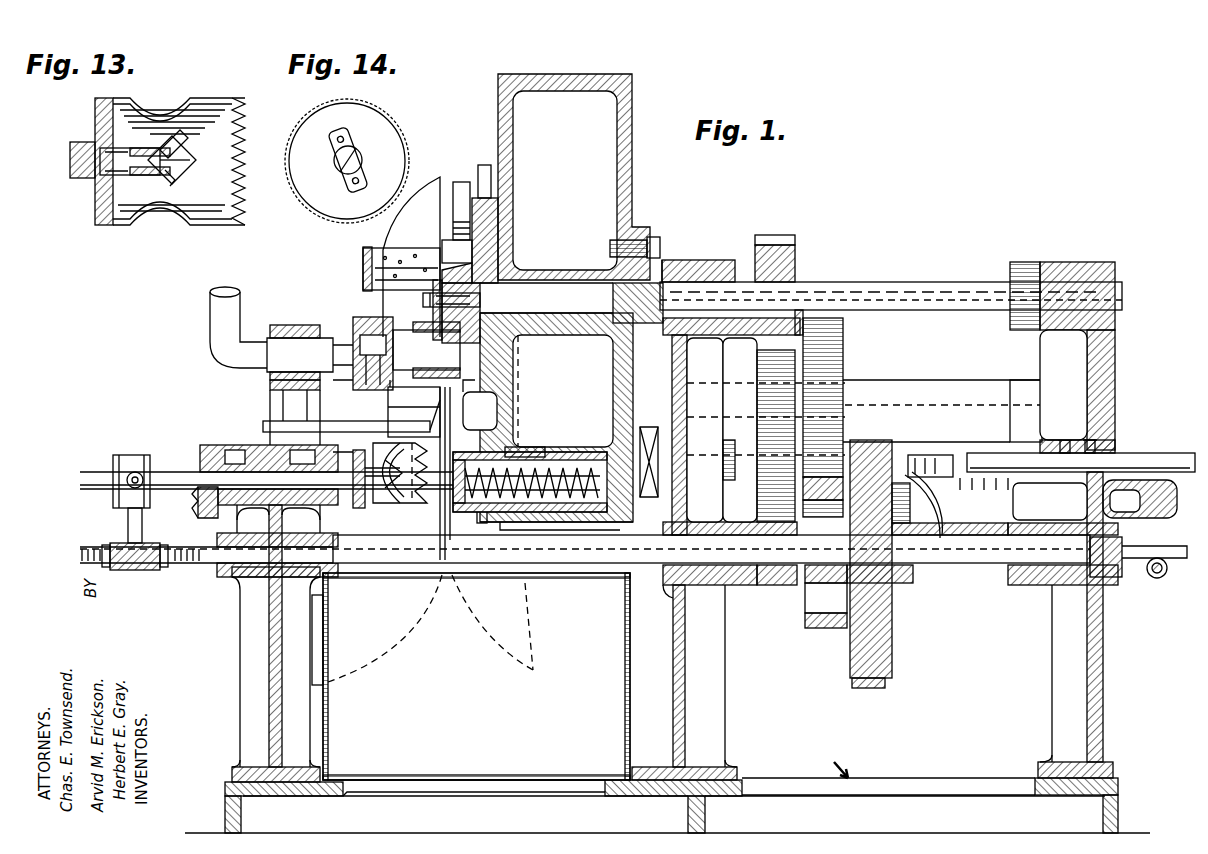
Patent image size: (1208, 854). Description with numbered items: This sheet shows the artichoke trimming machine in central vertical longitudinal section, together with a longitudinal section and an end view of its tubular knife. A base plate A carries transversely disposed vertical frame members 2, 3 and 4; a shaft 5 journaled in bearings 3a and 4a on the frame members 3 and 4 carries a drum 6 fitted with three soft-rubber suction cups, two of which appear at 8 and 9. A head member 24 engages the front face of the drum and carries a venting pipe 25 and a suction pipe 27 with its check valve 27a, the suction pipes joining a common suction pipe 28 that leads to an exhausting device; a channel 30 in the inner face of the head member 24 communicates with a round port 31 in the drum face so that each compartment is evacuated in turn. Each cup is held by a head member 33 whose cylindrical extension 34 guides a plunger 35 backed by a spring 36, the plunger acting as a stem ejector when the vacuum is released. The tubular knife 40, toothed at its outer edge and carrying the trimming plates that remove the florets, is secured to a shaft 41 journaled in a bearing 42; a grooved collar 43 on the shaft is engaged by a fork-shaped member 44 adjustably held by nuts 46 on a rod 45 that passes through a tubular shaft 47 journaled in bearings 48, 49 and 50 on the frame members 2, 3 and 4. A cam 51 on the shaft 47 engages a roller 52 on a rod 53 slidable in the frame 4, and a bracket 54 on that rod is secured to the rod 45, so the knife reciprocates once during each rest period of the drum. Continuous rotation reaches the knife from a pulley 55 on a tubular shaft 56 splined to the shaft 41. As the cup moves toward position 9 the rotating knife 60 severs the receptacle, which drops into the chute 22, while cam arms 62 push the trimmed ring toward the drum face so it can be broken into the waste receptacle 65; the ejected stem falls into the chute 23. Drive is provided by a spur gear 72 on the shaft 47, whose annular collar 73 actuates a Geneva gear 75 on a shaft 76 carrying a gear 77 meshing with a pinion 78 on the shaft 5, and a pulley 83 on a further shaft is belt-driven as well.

In FIG. 1, the vertical frame member 2 is at (246, 690).
In FIG. 1, the vertical frame member 3 is at (714, 667).
In FIG. 1, the bearing 3a is at (695, 262).
In FIG. 1, the vertical frame member 4 is at (1062, 698).
In FIG. 1, the bearing 4a is at (1078, 264).
In FIG. 1, the shaft 5 is at (888, 283).
In FIG. 1, the drum 6 is at (632, 86).
In FIG. 1, the suction cup 8 is at (462, 505).
In FIG. 1, the suction cup 9 is at (458, 182).
In FIG. 1, the chute 22 is at (387, 406).
In FIG. 1, the chute 23 is at (383, 235).
In FIG. 1, the head member 24 is at (500, 249).
In FIG. 1, the venting pipe 25 is at (418, 250).
In FIG. 1, the suction pipe 27 is at (410, 330).
In FIG. 1, the check valve 27a is at (360, 315).
In FIG. 1, the common suction pipe 28 is at (207, 314).
In FIG. 1, the channel 30 is at (470, 396).
In FIG. 1, the round port 31 is at (520, 359).
In FIG. 1, the head member 33 is at (490, 178).
In FIG. 1, the cylindrical extension 34 is at (560, 516).
In FIG. 1, the plunger 35 is at (520, 455).
In FIG. 1, the spring 36 is at (535, 470).
In FIG. 13, the tubular knife 40 is at (195, 222).
In FIG. 14, the tubular knife 40 is at (290, 120).
In FIG. 1, the tubular knife 40 is at (390, 450).
In FIG. 13, the shaft 41 is at (86, 168).
In FIG. 1, the shaft 41 is at (182, 470).
In FIG. 1, the bearing 42 is at (255, 440).
In FIG. 1, the grooved collar 43 is at (138, 455).
In FIG. 1, the fork-shaped member 44 is at (128, 520).
In FIG. 1, the rod 45 is at (203, 548).
In FIG. 1, the nuts 46 is at (163, 572).
In FIG. 1, the tubular shaft 47 is at (243, 582).
In FIG. 1, the bearing 48 is at (268, 585).
In FIG. 1, the bearing 49 is at (668, 600).
In FIG. 1, the bearing 50 is at (1060, 586).
In FIG. 1, the cam 51 is at (912, 583).
In FIG. 1, the roller 52 is at (925, 478).
In FIG. 1, the rod 53 is at (1142, 452).
In FIG. 13, the bracket 54 is at (178, 140).
In FIG. 14, the bracket 54 is at (362, 162).
In FIG. 1, the bracket 54 is at (390, 496).
In FIG. 1, the pulley 55 is at (212, 445).
In FIG. 1, the tubular shaft 56 is at (198, 490).
In FIG. 1, the knife 60 is at (432, 510).
In FIG. 1, the cam arms 62 is at (437, 410).
In FIG. 1, the waste receptacle 65 is at (476, 676).
In FIG. 1, the spur gear 72 is at (863, 690).
In FIG. 1, the annular collar 73 is at (810, 630).
In FIG. 1, the Geneva gear 75 is at (845, 368).
In FIG. 1, the shaft 76 is at (956, 413).
In FIG. 1, the gear 77 is at (755, 378).
In FIG. 1, the pinion 78 is at (796, 254).
In FIG. 1, the pulley 83 is at (645, 500).
In FIG. 1, the base plate A is at (831, 765).